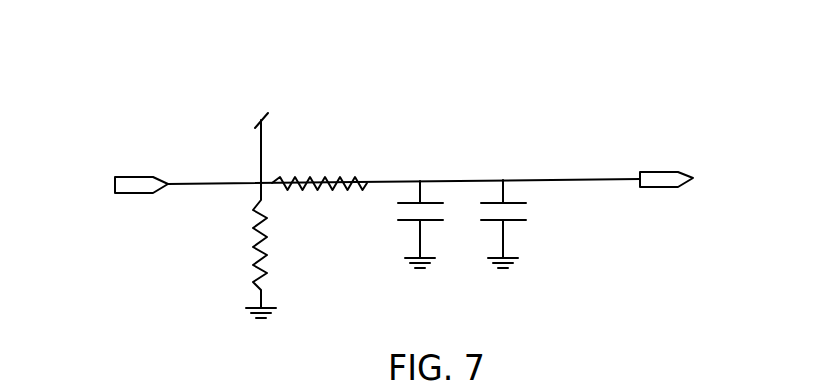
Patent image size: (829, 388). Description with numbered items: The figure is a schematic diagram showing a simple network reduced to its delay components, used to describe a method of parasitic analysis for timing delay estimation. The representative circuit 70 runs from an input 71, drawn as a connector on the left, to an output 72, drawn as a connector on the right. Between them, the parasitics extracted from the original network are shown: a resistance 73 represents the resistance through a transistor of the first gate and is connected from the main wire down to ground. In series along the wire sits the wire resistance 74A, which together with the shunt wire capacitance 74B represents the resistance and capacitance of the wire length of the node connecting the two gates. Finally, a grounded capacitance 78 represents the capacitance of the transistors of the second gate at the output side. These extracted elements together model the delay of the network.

The representative circuit 70 is at (152, 98).
The input 71 is at (138, 177).
The output 72 is at (662, 171).
The resistance 73 is at (255, 263).
The resistance of the wire length 74A is at (352, 167).
The capacitance of the wire length 74B is at (435, 195).
The grounded capacitance 78 is at (523, 195).